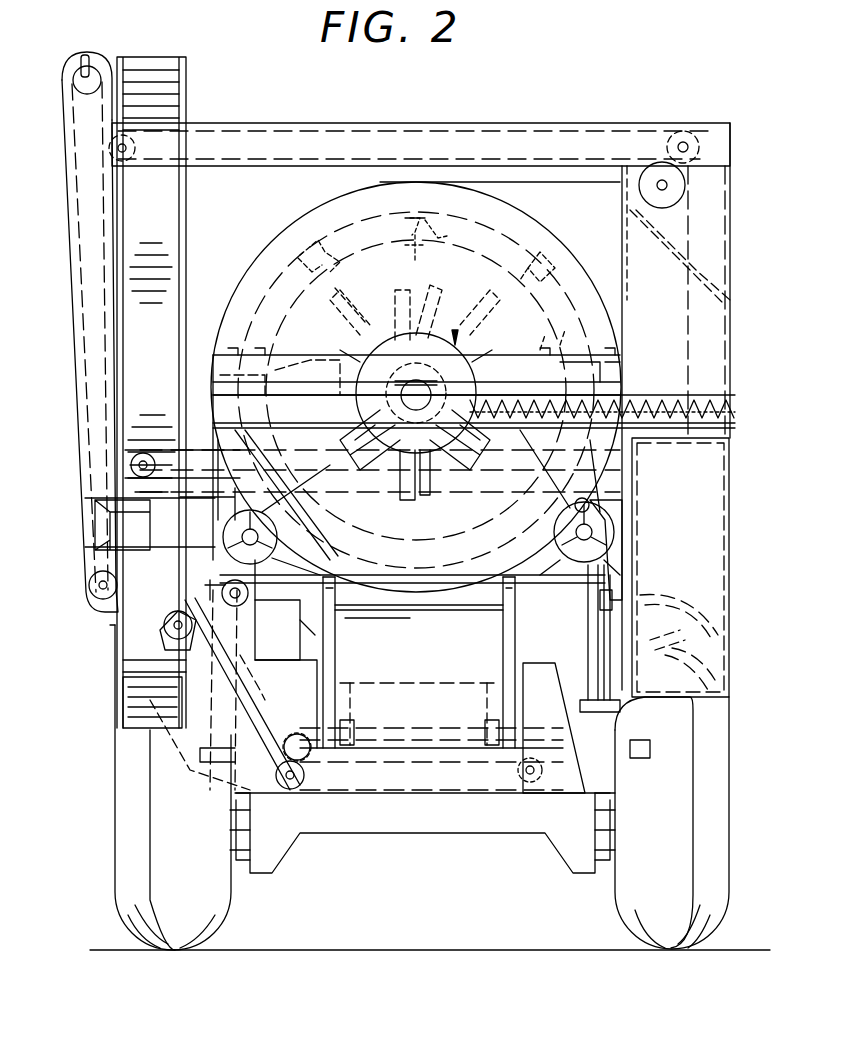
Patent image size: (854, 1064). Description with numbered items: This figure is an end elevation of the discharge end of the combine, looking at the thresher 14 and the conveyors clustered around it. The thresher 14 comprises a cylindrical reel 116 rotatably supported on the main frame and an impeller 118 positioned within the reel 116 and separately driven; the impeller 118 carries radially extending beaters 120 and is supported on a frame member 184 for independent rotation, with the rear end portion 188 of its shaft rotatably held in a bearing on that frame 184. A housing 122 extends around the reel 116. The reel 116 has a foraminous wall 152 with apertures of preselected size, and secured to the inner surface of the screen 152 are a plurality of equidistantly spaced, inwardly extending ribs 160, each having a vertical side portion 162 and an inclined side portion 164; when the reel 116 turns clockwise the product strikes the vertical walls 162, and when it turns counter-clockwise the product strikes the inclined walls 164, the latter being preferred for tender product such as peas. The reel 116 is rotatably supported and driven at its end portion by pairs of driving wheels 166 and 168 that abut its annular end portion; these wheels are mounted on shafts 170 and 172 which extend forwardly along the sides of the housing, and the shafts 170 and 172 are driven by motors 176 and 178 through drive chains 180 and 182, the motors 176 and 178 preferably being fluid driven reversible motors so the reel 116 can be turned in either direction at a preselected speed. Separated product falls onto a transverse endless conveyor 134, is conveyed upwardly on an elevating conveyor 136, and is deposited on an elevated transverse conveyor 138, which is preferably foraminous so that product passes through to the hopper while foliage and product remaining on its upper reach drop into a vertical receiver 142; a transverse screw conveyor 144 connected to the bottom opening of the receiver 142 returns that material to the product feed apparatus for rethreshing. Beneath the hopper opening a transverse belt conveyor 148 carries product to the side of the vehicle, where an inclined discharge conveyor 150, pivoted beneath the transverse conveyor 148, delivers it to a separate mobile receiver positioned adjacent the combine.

The thresher 14 is at (506, 114).
The cylindrical reel 116 is at (500, 220).
The impeller 118 is at (454, 330).
The beaters 120 is at (432, 285).
The housing 122 is at (545, 222).
The transverse endless conveyor 134 is at (265, 690).
The elevating conveyor 136 is at (165, 283).
The elevated transverse conveyor 138 is at (299, 128).
The vertical receiver 142 is at (730, 200).
The transverse screw conveyor 144 is at (698, 392).
The transverse belt conveyor 148 is at (300, 445).
The inclined discharge conveyor 150 is at (82, 340).
The foraminous wall 152 is at (535, 250).
The inwardly extending ribs 160 is at (405, 243).
The vertical side portion 162 is at (440, 233).
The inclined side portion 164 is at (408, 222).
The driving wheels 166 is at (298, 555).
The driving wheels 168 is at (612, 527).
The shaft 170 is at (262, 528).
The shaft 172 is at (552, 523).
The motor 176 is at (256, 625).
The motor 178 is at (578, 615).
The drive chain 180 is at (250, 592).
The drive chain 182 is at (622, 562).
The frame member 184 is at (538, 362).
The shaft rear end portion 188 is at (422, 402).